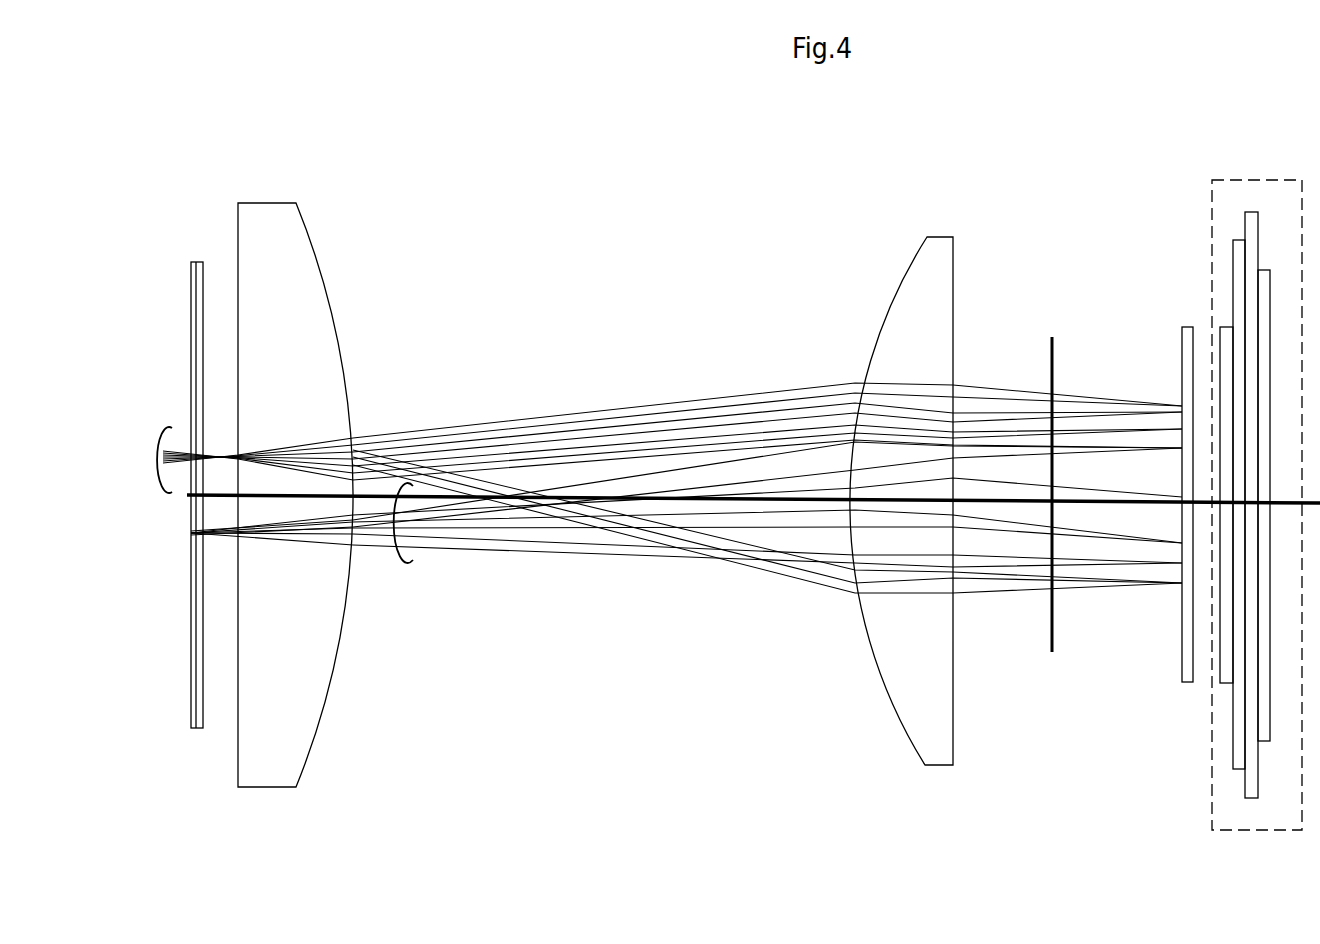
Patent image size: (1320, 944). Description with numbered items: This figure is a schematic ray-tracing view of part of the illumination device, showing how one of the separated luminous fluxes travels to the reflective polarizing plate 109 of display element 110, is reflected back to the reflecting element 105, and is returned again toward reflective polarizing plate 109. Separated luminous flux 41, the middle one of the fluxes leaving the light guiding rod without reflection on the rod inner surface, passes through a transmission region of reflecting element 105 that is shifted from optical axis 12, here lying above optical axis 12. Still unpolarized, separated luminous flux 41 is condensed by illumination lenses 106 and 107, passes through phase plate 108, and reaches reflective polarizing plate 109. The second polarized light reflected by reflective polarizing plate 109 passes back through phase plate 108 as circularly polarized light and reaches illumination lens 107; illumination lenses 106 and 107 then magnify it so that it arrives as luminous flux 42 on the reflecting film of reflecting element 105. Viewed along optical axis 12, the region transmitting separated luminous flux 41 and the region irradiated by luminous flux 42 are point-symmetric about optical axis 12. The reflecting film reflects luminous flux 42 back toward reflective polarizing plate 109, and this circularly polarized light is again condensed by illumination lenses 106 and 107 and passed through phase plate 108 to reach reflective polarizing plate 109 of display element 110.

The optical axis 12 is at (758, 500).
The separated luminous flux 41 is at (165, 425).
The luminous flux 42 is at (403, 565).
The reflecting element 105 is at (196, 262).
The illumination lens 106 is at (265, 217).
The illumination lens 107 is at (938, 245).
The phase plate 108 is at (1052, 337).
The reflective polarizing plate 109 is at (1188, 327).
The display element 110 is at (1257, 190).